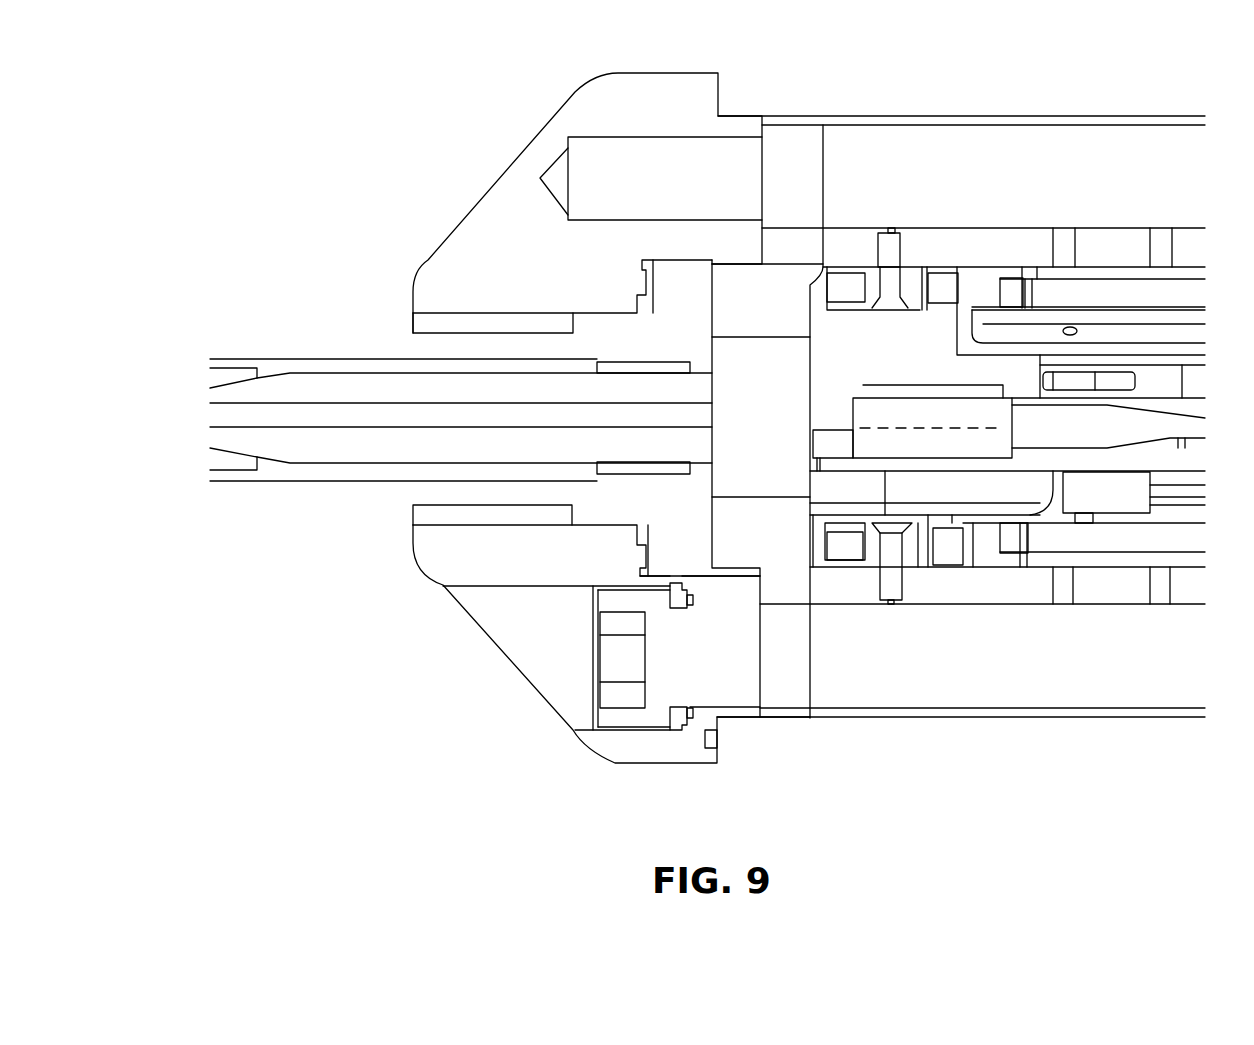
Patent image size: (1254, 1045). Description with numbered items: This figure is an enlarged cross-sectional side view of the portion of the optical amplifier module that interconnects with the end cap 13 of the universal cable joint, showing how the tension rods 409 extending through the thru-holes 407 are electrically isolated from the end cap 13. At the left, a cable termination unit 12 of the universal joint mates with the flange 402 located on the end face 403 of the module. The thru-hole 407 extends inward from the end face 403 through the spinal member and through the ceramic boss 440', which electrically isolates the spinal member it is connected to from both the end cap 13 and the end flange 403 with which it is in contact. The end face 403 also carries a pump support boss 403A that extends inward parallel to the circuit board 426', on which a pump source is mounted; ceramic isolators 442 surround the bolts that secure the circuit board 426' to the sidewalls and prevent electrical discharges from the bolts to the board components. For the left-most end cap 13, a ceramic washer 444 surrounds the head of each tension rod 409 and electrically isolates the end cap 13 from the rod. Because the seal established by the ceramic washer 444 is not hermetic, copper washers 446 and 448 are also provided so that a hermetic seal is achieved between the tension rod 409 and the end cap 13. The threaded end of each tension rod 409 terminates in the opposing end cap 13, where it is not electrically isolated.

The cable termination unit 12 is at (296, 359).
The end cap 13 is at (437, 560).
The flange 402 is at (797, 360).
The end face 403 is at (788, 283).
The pump support boss 403A is at (983, 490).
The through-hole 407 is at (590, 150).
The tension rod 409 is at (932, 693).
The circuit board 426' is at (1088, 290).
The ceramic boss 440' is at (801, 392).
The ceramic isolator 442 is at (832, 447).
The ceramic washer 444 is at (682, 580).
The copper washer 446 is at (688, 708).
The copper washer 448 is at (670, 598).